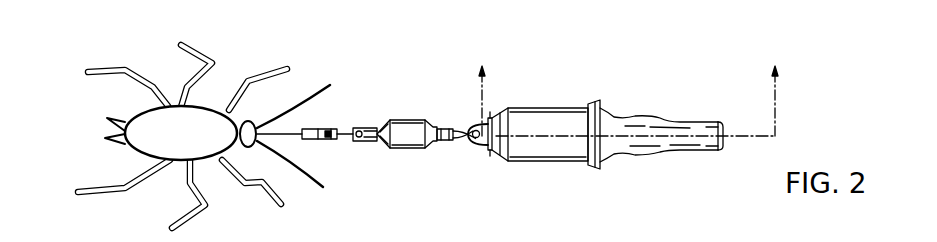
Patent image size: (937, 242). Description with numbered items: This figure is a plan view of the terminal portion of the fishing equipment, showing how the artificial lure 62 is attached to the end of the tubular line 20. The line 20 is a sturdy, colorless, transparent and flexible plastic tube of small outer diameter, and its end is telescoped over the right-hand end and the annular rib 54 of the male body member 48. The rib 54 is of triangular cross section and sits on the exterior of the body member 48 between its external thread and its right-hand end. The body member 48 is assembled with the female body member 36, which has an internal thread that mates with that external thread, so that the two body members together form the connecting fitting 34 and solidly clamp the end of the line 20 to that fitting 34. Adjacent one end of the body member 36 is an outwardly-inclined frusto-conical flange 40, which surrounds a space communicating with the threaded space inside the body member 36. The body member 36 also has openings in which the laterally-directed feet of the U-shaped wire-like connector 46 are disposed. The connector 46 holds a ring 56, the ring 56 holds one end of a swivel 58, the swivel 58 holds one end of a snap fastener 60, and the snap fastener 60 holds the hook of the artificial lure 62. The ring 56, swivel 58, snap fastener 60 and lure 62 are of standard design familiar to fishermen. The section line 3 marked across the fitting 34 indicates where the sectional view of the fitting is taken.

The section line 3- 3 is at (628, 87).
The tubular line 20 is at (715, 122).
The connecting fitting 34 is at (605, 141).
The female body member 36 is at (552, 140).
The frusto-conical flange 40 is at (593, 108).
The wire-like connector 46 is at (480, 147).
The male body member 48 is at (633, 160).
The annular rib 54 is at (617, 113).
The ring 56 is at (457, 130).
The swivel 58 is at (413, 138).
The snap fastener 60 is at (328, 130).
The artificial lure 62 is at (200, 120).